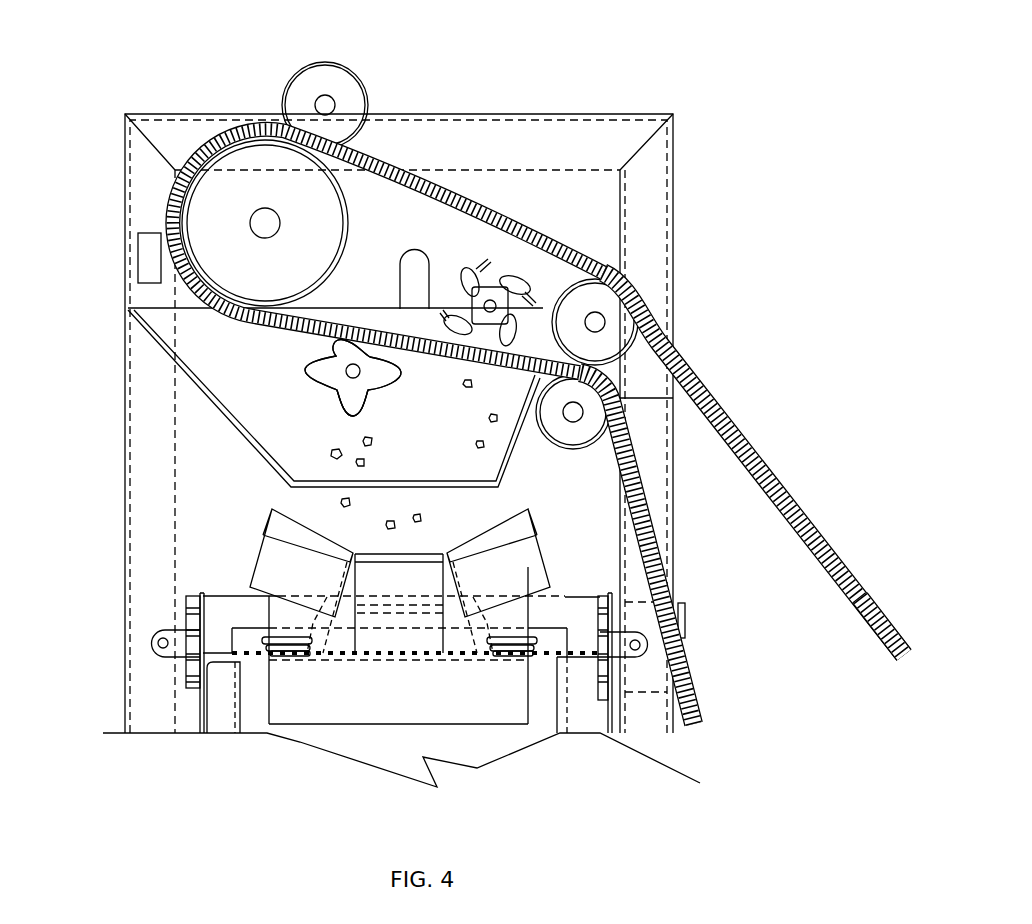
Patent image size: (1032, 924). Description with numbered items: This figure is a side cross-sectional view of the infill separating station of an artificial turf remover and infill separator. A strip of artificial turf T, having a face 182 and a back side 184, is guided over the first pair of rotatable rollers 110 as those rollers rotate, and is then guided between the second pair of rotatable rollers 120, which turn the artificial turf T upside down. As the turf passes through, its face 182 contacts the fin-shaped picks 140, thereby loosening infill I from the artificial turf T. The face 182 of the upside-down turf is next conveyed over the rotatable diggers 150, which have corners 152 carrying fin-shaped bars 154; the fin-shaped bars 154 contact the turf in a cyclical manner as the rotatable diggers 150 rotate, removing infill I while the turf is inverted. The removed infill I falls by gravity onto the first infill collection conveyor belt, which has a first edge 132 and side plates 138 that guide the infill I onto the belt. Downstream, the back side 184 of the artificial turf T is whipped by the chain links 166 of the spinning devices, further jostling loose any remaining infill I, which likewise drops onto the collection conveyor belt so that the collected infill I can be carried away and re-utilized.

The first pair of rotatable rollers 110 is at (597, 418).
The second pair of rotatable rollers 120 is at (318, 208).
The first edge 132 is at (515, 613).
The side plates 138 is at (272, 553).
The fin-shaped picks 140 is at (162, 270).
The rotatable diggers 150 is at (340, 382).
The corners 152 is at (310, 363).
The fin-shaped bars 154 is at (353, 410).
The chain links 166 is at (457, 263).
The face 182 is at (765, 443).
The back side 184 is at (717, 427).
The artificial turf T is at (840, 562).
The infill I is at (489, 420).